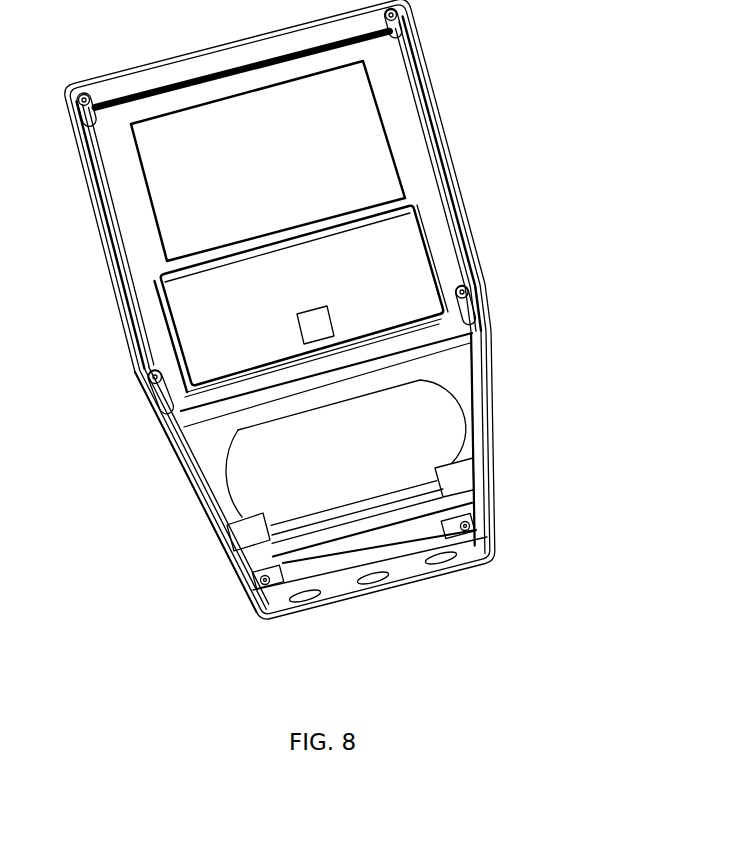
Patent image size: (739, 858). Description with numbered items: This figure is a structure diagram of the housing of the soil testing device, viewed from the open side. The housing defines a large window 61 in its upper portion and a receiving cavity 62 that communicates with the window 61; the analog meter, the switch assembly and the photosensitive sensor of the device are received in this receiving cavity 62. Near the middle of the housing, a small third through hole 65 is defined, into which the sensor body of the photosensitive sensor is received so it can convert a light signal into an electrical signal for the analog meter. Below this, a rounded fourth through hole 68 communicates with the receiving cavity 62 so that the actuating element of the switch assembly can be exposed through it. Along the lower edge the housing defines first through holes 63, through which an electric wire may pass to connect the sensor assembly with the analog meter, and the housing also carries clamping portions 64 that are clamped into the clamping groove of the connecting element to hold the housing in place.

The window 61 is at (150, 206).
The receiving cavity 62 is at (423, 171).
The first through hole 63 is at (377, 584).
The clamping portion 64 is at (472, 458).
The third through hole 65 is at (323, 308).
The fourth through hole 68 is at (224, 465).